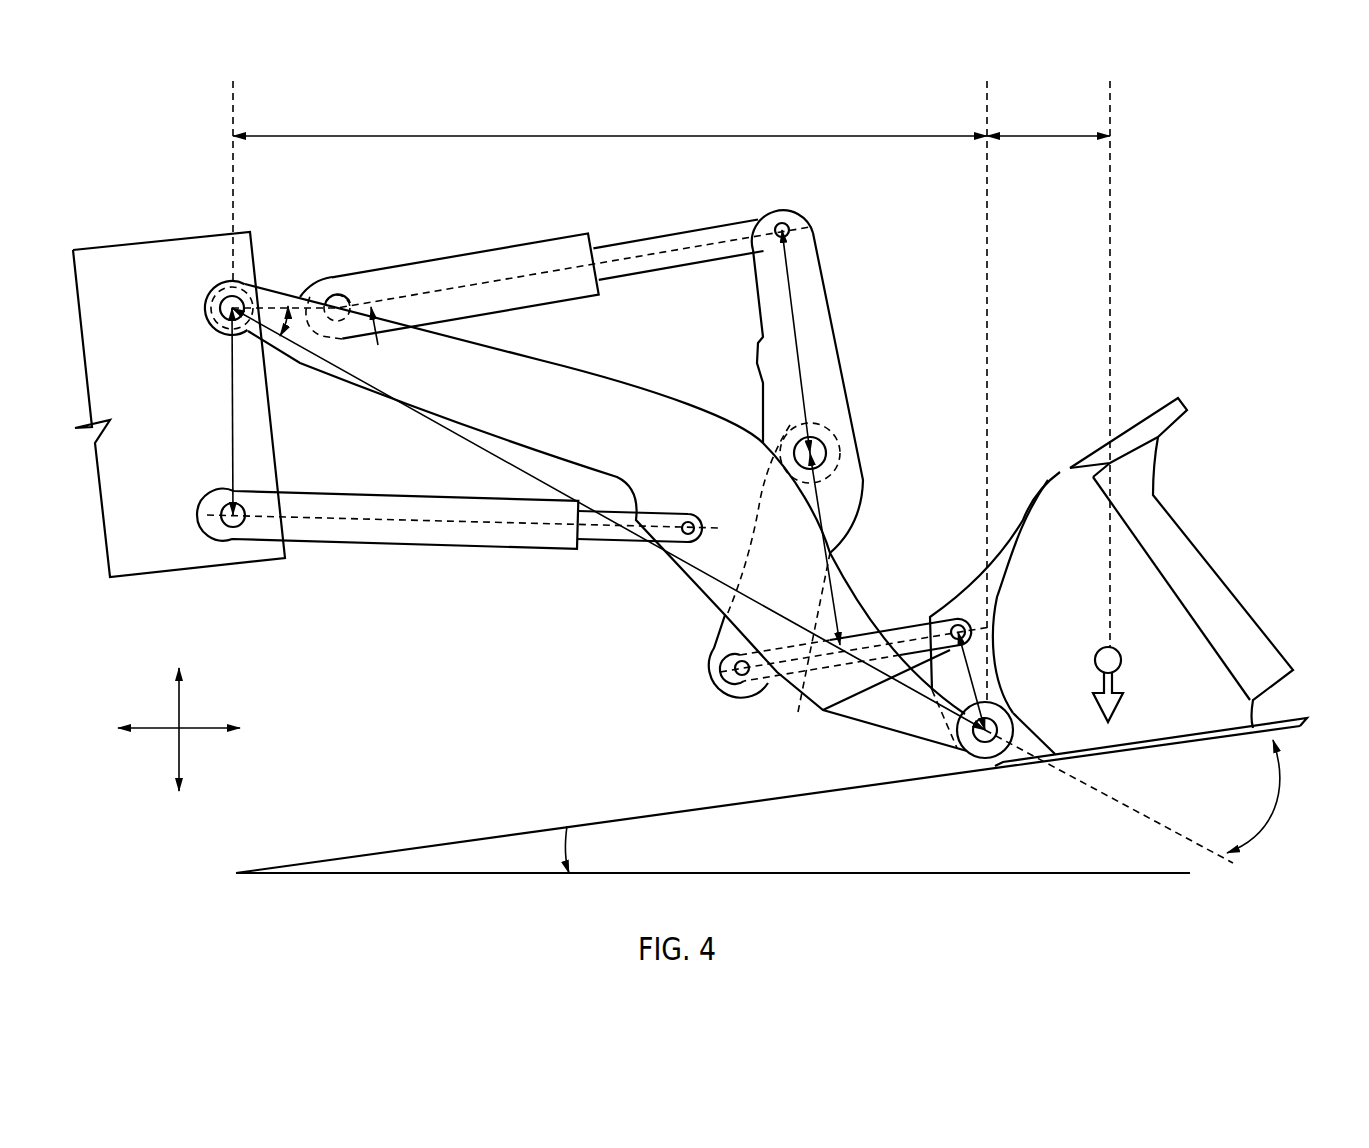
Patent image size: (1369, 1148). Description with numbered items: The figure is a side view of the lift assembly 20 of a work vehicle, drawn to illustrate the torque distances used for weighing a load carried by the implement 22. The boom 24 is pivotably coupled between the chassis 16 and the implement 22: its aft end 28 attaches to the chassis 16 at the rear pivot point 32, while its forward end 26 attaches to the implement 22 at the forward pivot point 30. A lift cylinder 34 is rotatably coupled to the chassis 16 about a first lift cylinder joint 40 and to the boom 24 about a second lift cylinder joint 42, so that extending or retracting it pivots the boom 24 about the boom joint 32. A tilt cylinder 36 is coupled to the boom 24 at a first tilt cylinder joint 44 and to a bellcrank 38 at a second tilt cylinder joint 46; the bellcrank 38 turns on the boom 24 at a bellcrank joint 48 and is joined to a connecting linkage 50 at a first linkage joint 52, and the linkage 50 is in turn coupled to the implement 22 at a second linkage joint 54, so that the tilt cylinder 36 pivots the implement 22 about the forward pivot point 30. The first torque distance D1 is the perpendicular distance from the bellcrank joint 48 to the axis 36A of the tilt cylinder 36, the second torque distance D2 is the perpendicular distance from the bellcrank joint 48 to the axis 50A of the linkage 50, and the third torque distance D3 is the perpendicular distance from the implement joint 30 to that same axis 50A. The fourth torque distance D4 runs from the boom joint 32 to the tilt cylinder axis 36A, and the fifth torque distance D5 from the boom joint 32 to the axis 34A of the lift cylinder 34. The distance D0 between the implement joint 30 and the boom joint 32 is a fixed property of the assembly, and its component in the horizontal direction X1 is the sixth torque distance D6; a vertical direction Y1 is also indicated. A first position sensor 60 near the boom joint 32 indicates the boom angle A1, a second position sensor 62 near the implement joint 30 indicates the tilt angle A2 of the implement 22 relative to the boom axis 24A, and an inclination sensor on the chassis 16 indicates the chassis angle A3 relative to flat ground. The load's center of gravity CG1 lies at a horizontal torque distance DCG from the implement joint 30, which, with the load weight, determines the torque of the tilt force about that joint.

The chassis 16 is at (157, 240).
The lift assembly 20 is at (1178, 120).
The implement 22 is at (1150, 570).
The boom 24 is at (618, 392).
The axis of the boom 24A is at (1096, 790).
The forward end 26 is at (1013, 727).
The aft end 28 is at (208, 300).
The forward pivot point 30 is at (1008, 712).
The rear pivot point 32 is at (249, 296).
The lift cylinder 34 is at (360, 500).
The axis of the lift cylinder 34A is at (407, 523).
The tilt cylinder 36 is at (489, 262).
The axis of the tilt cylinder 36A is at (628, 247).
The bellcrank 38 is at (772, 309).
The first lift cylinder joint 40 is at (230, 540).
The second lift cylinder joint 42 is at (686, 536).
The first tilt cylinder joint 44 is at (337, 322).
The second tilt cylinder joint 46 is at (778, 220).
The bellcrank joint 48 is at (826, 450).
The connecting linkage 50 is at (915, 630).
The axis of the linkage 50A is at (855, 648).
The first linkage joint 52 is at (727, 662).
The second linkage joint 54 is at (957, 617).
The first position sensor 60 is at (211, 322).
The second position sensor 62 is at (761, 492).
The distance between the implement joint and the boom joint D0 is at (497, 458).
The first torque distance D1 is at (796, 330).
The second torque distance D2 is at (820, 517).
The third torque distance D3 is at (972, 666).
The fourth torque distance D4 is at (367, 280).
The fifth torque distance D5 is at (230, 432).
The sixth torque distance D6 is at (605, 135).
The torque distance to center of gravity DCG is at (1061, 135).
The center of gravity of the load CG1 is at (1121, 658).
The boom angle A1 is at (282, 340).
The tilt angle A2 is at (1278, 793).
The chassis angle A3 is at (574, 852).
The horizontal direction X1 is at (192, 729).
The vertical direction Y1 is at (177, 712).